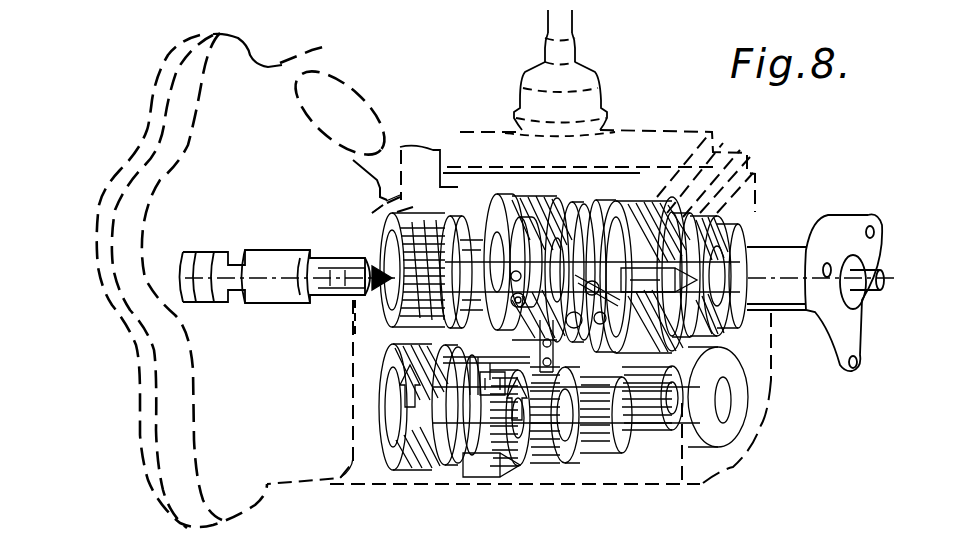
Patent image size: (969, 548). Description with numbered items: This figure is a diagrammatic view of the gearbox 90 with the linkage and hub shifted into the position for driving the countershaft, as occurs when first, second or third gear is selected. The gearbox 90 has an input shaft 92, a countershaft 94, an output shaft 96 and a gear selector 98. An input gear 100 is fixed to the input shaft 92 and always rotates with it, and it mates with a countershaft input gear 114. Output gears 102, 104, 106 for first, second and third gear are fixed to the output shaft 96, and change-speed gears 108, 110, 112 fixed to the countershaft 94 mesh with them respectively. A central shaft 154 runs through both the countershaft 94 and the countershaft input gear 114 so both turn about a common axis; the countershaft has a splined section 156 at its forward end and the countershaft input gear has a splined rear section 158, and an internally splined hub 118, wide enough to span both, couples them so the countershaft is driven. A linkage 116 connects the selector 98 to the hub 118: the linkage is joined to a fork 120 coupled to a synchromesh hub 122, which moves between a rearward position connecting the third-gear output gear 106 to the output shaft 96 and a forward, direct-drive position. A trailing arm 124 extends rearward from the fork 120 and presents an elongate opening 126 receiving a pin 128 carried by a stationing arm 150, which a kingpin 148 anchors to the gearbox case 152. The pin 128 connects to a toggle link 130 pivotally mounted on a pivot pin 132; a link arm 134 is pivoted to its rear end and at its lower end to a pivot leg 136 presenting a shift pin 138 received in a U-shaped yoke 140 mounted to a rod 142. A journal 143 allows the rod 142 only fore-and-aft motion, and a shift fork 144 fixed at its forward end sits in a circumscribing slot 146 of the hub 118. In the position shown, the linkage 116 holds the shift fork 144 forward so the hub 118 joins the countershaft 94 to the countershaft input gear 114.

The gearbox 90 is at (645, 84).
The input shaft 92 is at (291, 242).
The countershaft 94 is at (657, 440).
The output shaft 96 is at (799, 238).
The gear selector 98 is at (602, 64).
The input gear 100 is at (425, 240).
The output gear 102 is at (748, 215).
The output gear 104 is at (567, 250).
The output gear 106 is at (518, 202).
The change-speed gear 108 is at (700, 474).
The change-speed gear 110 is at (612, 455).
The change-speed gear 112 is at (555, 466).
The countershaft input gear 114 is at (356, 460).
The linkage 116 is at (576, 262).
The hub 118 is at (500, 455).
The fork 120 is at (500, 245).
The synchromesh hub 122 is at (520, 250).
The trailing arm 124 is at (448, 280).
The elongate opening 126 is at (360, 312).
The pin 128 is at (527, 212).
The toggle link 130 is at (640, 240).
The pivot pin 132 is at (616, 258).
The link arm 134 is at (640, 362).
The pivot leg 136 is at (626, 435).
The shift pin 138 is at (528, 468).
The U-shaped yoke 140 is at (592, 450).
The rod 142 is at (435, 440).
The journal 143 is at (400, 398).
The shift fork 144 is at (445, 460).
The circumscribing slot 146 is at (462, 460).
The kingpin 148 is at (452, 330).
The stationing arm 150 is at (450, 318).
The gearbox case 152 is at (302, 48).
The central shaft 154 is at (731, 399).
The splined section 156 is at (498, 480).
The splined rear section 158 is at (400, 420).